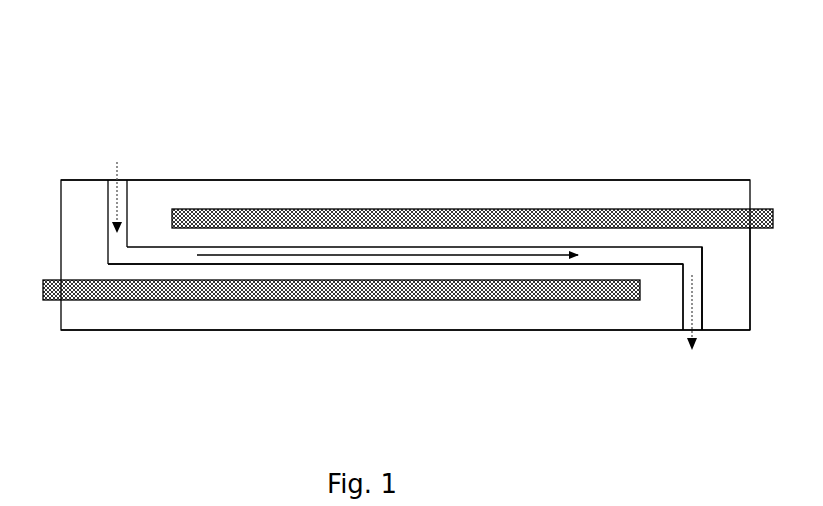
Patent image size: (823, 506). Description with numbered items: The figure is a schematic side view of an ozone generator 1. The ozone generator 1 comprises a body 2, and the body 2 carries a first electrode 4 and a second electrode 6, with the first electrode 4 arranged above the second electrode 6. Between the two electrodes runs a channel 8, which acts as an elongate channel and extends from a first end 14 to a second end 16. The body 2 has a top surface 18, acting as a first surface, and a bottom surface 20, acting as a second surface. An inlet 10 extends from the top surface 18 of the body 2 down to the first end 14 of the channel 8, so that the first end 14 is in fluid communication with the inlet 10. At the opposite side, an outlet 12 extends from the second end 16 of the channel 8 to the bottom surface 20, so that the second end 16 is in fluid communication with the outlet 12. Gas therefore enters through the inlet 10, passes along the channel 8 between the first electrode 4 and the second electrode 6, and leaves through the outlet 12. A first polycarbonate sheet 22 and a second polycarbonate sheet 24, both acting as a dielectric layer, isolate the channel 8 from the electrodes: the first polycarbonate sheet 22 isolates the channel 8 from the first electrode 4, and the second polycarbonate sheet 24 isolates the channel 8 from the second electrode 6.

The ozone generator 1 is at (67, 87).
The body 2 is at (62, 181).
The first electrode 4 is at (537, 213).
The second electrode 6 is at (363, 287).
The channel 8 is at (608, 252).
The inlet 10 is at (122, 178).
The outlet 12 is at (695, 325).
The first end 14 is at (108, 264).
The second end 16 is at (692, 257).
The top surface 18 is at (398, 180).
The bottom surface 20 is at (530, 330).
The first polycarbonate sheet 22 is at (277, 237).
The second polycarbonate sheet 24 is at (207, 273).